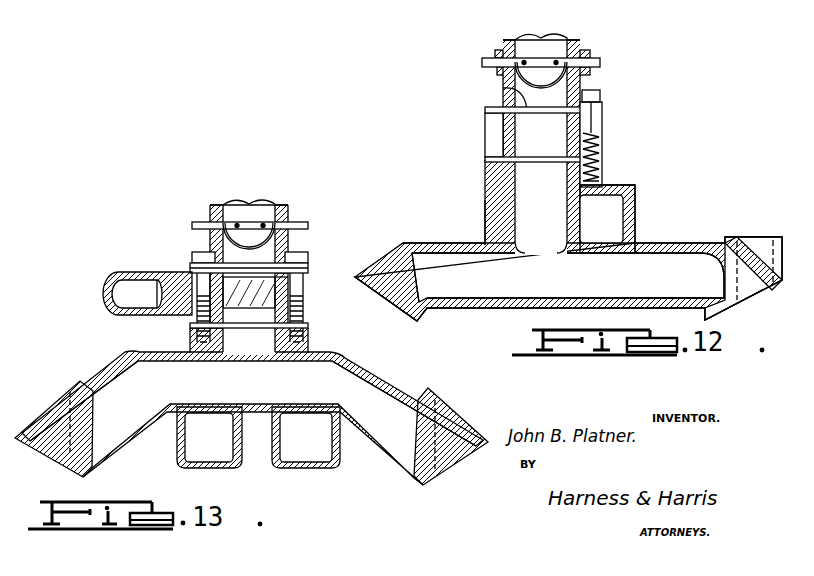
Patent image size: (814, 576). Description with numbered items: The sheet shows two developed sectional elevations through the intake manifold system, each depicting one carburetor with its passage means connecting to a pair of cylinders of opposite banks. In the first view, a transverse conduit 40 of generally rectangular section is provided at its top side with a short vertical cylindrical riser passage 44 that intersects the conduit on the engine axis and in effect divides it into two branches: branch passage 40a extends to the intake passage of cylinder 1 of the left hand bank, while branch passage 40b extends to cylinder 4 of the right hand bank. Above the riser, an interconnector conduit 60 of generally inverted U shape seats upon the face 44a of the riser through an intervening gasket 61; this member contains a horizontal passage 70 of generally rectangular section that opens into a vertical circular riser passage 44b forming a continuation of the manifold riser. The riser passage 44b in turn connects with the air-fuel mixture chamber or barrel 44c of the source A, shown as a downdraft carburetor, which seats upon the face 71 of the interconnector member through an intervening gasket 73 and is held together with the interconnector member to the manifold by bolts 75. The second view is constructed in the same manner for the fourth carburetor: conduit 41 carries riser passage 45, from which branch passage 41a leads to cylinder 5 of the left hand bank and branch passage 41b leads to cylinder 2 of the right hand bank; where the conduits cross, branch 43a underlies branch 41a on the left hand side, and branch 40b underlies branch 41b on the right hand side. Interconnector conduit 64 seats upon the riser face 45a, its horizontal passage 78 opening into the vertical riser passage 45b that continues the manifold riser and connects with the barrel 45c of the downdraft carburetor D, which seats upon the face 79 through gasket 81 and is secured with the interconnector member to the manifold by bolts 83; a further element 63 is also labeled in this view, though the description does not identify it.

In FIG. 12, the conduit 40 is at (513, 291).
In FIG. 12, the branch passage 40a is at (480, 282).
In FIG. 12, the branch passage 40b is at (684, 287).
In FIG. 13, the branch passage 40b is at (317, 449).
In FIG. 13, the conduit 41 is at (281, 394).
In FIG. 13, the branch passage 41a is at (138, 414).
In FIG. 12, the branch passage 41b is at (598, 214).
In FIG. 13, the branch passage 41b is at (388, 408).
In FIG. 13, the branch passage 43a is at (207, 442).
In FIG. 12, the riser passage 44 is at (558, 201).
In FIG. 12, the riser face 44a is at (486, 192).
In FIG. 12, the riser passage 44b is at (528, 135).
In FIG. 12, the air-fuel mixture chamber 44c is at (557, 93).
In FIG. 13, the riser passage 45 is at (266, 348).
In FIG. 13, the riser face 45a is at (197, 333).
In FIG. 13, the riser passage 45b is at (278, 282).
In FIG. 13, the air-fuel mixture chamber 45c is at (225, 250).
In FIG. 12, the interconnector conduit 60 is at (481, 127).
In FIG. 13, the interconnector conduit 60 is at (153, 264).
In FIG. 12, the gasket 61 is at (586, 142).
In FIG. 13, the lower plate 63 is at (300, 337).
In FIG. 13, the interconnector conduit 64 is at (314, 308).
In FIG. 13, the horizontal passage 70 is at (120, 293).
In FIG. 12, the face 71 is at (577, 110).
In FIG. 12, the gasket 73 is at (514, 98).
In FIG. 12, the bolt 75 is at (597, 128).
In FIG. 13, the horizontal passage 78 is at (262, 300).
In FIG. 13, the face 79 is at (198, 286).
In FIG. 13, the gasket 81 is at (290, 251).
In FIG. 13, the bolt 83 is at (306, 326).
In FIG. 12, the cylinder 1 is at (386, 303).
In FIG. 13, the cylinder 2 is at (451, 437).
In FIG. 12, the cylinder 4 is at (743, 300).
In FIG. 13, the cylinder 5 is at (54, 430).
In FIG. 12, the carburetor A is at (590, 43).
In FIG. 13, the carburetor D is at (299, 206).